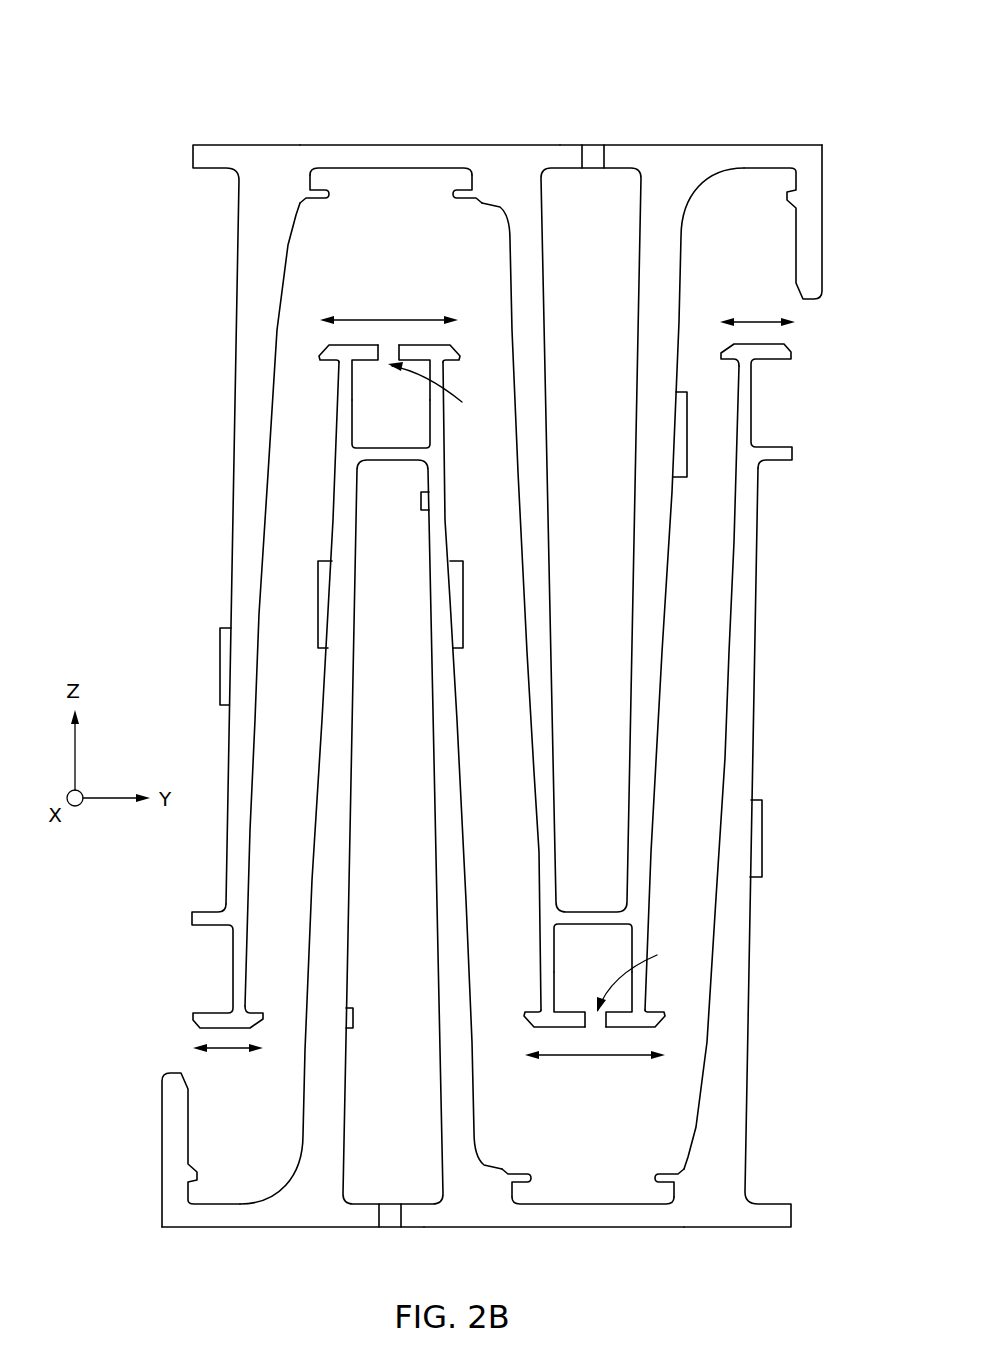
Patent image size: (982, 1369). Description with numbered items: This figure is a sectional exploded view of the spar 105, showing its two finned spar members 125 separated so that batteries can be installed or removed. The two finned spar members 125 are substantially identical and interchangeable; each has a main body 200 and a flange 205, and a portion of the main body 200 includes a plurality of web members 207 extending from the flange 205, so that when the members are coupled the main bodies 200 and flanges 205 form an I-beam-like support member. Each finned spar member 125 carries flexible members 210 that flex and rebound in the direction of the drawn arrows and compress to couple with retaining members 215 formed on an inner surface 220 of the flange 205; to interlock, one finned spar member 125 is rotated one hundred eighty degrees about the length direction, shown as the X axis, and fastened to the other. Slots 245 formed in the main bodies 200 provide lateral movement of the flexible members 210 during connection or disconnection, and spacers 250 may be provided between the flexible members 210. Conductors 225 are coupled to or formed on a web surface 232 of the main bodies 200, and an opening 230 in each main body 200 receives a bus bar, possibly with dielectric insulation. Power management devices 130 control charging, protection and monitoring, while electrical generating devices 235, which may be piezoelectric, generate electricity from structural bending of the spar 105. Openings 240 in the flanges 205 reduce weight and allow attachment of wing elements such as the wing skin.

The spar 105 is at (762, 43).
The finned spar member 125 is at (513, 158).
The power management device 130 is at (225, 678).
The main body 200 is at (670, 158).
The flange 205 is at (245, 145).
The web member 207 is at (655, 568).
The flexible member 210 is at (352, 415).
The retaining member 215 is at (468, 196).
The inner surface 220 is at (427, 177).
The conductor 225 is at (325, 597).
The opening 230 is at (418, 370).
The web surface 232 is at (323, 710).
The electrical generating device 235 is at (429, 501).
The opening 240 is at (388, 158).
The slot 245 is at (545, 687).
The spacer 250 is at (377, 447).